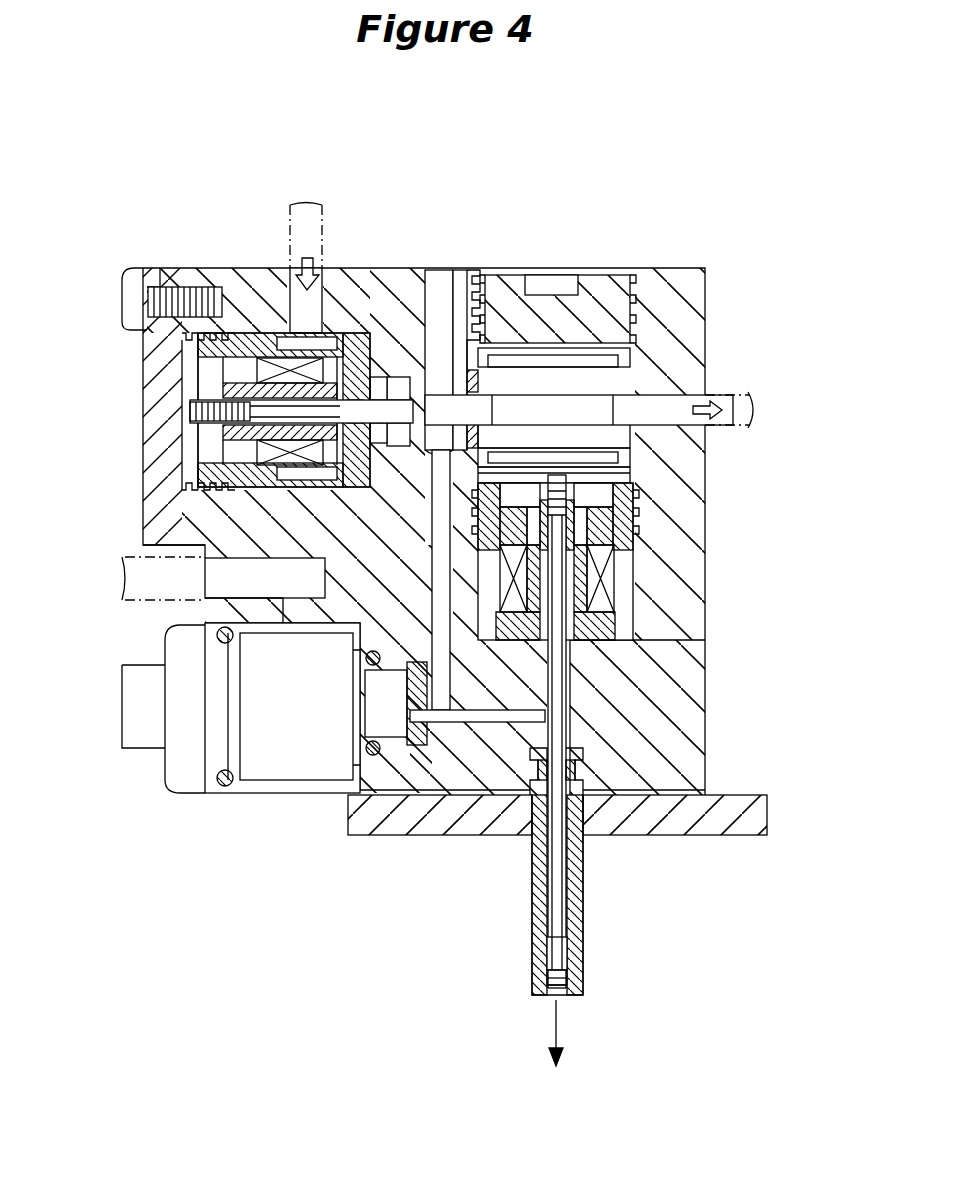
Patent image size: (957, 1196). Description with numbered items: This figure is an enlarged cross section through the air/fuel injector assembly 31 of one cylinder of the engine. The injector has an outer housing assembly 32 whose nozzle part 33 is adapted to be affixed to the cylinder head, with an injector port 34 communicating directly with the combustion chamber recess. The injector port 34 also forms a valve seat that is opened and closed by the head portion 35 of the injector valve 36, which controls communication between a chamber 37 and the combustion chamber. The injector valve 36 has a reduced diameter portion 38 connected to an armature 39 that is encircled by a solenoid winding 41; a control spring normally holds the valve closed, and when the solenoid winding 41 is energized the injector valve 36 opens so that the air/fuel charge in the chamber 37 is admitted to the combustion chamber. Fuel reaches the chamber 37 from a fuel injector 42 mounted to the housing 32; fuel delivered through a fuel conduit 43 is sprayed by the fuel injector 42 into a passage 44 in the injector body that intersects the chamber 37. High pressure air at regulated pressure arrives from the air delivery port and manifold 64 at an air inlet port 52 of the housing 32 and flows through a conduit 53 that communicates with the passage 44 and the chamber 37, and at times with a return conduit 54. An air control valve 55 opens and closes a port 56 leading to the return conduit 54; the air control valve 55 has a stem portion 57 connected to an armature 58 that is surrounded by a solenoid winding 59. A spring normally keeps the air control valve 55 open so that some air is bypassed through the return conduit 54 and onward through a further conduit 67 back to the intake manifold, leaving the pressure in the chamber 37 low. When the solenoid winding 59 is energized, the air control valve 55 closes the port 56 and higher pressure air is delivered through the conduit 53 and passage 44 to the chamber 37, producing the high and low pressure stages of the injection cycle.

The air/fuel injector assembly 31 is at (715, 298).
The outer housing assembly 32 is at (705, 573).
The nozzle part 33 is at (582, 915).
The injector port 34 is at (547, 995).
The head portion 35 is at (562, 998).
The injector valve 36 is at (569, 966).
The chamber 37 is at (557, 843).
The reduced diameter portion 38 is at (560, 737).
The armature 39 is at (630, 497).
The solenoid winding 41 is at (603, 573).
The fuel injector 42 is at (283, 767).
The fuel conduit 43 is at (128, 603).
The passage 44 is at (452, 703).
The air inlet port 52 is at (332, 268).
The conduit 53 is at (430, 525).
The return conduit 54 is at (478, 395).
The air control valve 55 is at (420, 390).
The port 56 is at (438, 395).
The stem portion 57 is at (222, 388).
The armature 58 is at (205, 450).
The solenoid winding 59 is at (255, 268).
The air delivery port and manifold 64 is at (327, 208).
The conduit 67 is at (717, 392).